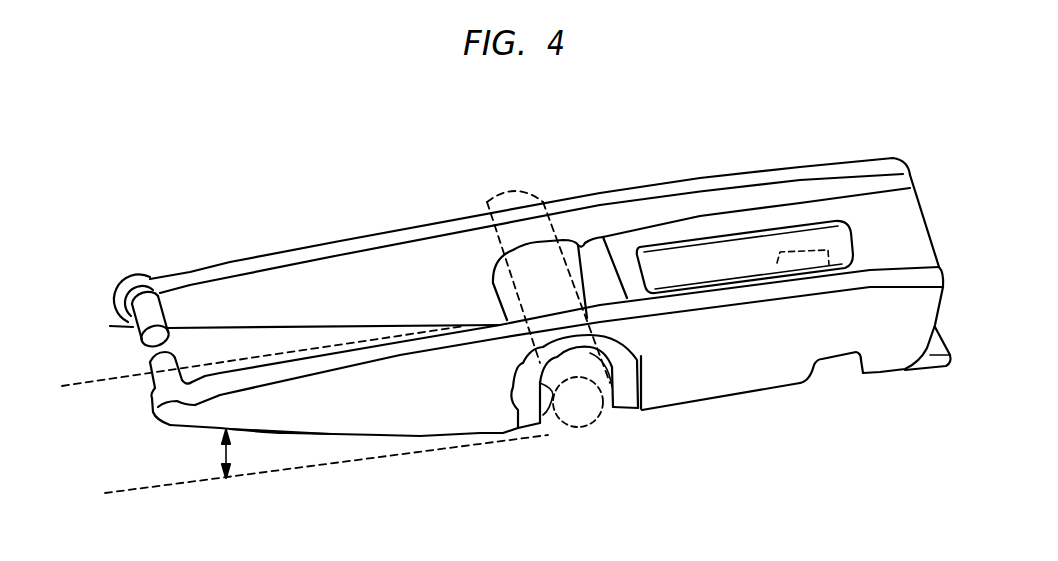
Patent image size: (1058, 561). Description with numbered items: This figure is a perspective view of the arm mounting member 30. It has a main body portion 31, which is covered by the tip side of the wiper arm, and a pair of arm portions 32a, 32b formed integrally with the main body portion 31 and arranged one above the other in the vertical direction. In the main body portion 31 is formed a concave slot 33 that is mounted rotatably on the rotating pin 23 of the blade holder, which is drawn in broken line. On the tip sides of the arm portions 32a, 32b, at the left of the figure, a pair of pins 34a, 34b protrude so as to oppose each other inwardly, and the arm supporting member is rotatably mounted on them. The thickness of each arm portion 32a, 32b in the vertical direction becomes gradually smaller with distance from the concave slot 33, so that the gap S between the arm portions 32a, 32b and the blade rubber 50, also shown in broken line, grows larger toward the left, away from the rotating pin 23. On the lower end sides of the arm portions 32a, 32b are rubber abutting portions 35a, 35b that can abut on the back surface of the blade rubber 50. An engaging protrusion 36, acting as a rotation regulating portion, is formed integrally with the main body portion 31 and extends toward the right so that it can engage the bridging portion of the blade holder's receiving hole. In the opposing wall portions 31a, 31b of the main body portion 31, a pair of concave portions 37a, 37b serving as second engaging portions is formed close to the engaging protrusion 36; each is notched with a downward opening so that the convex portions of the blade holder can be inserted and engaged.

The arm mounting member 30 is at (654, 142).
The main body portion 31 is at (876, 211).
The wall portion 31a is at (727, 178).
The wall portion 31b is at (716, 373).
The arm portion 32a is at (238, 297).
The arm portion 32b is at (342, 420).
The concave slot 33 is at (593, 378).
The pin 34a is at (128, 325).
The pin 34b is at (152, 380).
The rubber abutting portion 35a is at (305, 326).
The rubber abutting portion 35b is at (270, 440).
The engaging protrusion 36 is at (942, 352).
The concave portion 37a is at (808, 253).
The concave portion 37b is at (838, 360).
The rotating pin 23 is at (585, 403).
The blade rubber 50 is at (142, 455).
The gap S is at (216, 454).